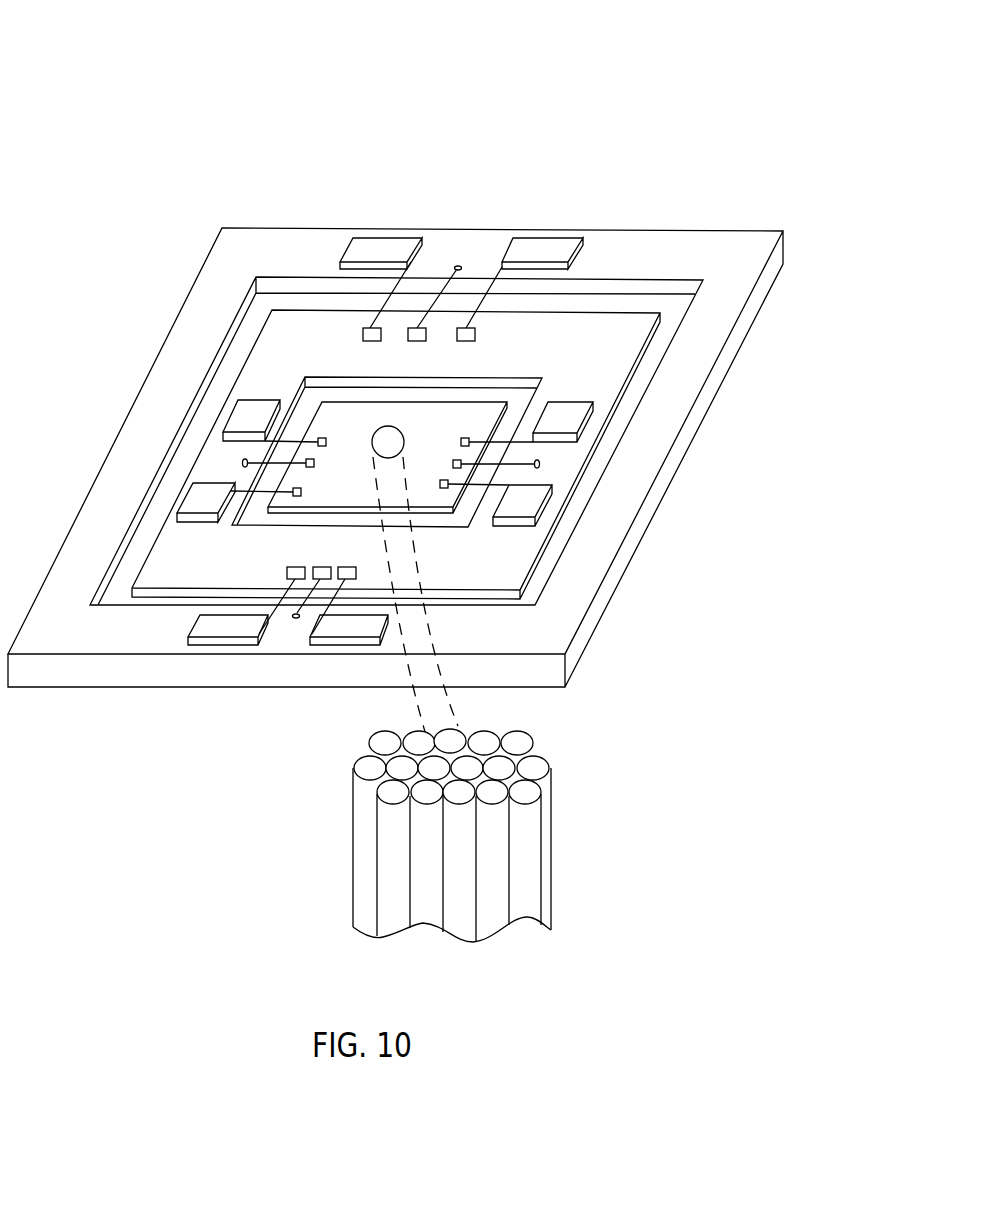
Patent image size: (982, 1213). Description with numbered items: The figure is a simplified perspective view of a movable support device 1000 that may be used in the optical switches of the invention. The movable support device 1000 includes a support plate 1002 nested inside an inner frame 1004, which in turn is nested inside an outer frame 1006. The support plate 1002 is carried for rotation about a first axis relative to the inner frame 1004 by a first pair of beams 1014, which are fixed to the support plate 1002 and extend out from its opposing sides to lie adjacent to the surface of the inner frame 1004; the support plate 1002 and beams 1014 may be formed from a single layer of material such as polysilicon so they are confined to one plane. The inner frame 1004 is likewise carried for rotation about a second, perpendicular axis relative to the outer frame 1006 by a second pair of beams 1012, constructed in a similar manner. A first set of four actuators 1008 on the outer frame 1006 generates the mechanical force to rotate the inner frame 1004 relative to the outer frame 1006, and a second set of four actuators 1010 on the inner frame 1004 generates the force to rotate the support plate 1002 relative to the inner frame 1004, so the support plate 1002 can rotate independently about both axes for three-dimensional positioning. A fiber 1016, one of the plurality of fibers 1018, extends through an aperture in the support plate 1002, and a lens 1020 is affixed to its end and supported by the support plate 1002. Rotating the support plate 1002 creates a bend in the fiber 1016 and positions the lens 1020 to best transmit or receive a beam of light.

The movable support device 1000 is at (186, 121).
The support plate 1002 is at (470, 425).
The inner frame 1004 is at (623, 343).
The outer frame 1006 is at (748, 264).
The actuators 1008 is at (385, 245).
The actuators 1010 is at (247, 417).
The beams 1012 is at (458, 265).
The beams 1014 is at (243, 462).
The fiber 1016 is at (452, 714).
The plurality of fibers 1018 is at (551, 870).
The lens 1020 is at (388, 442).